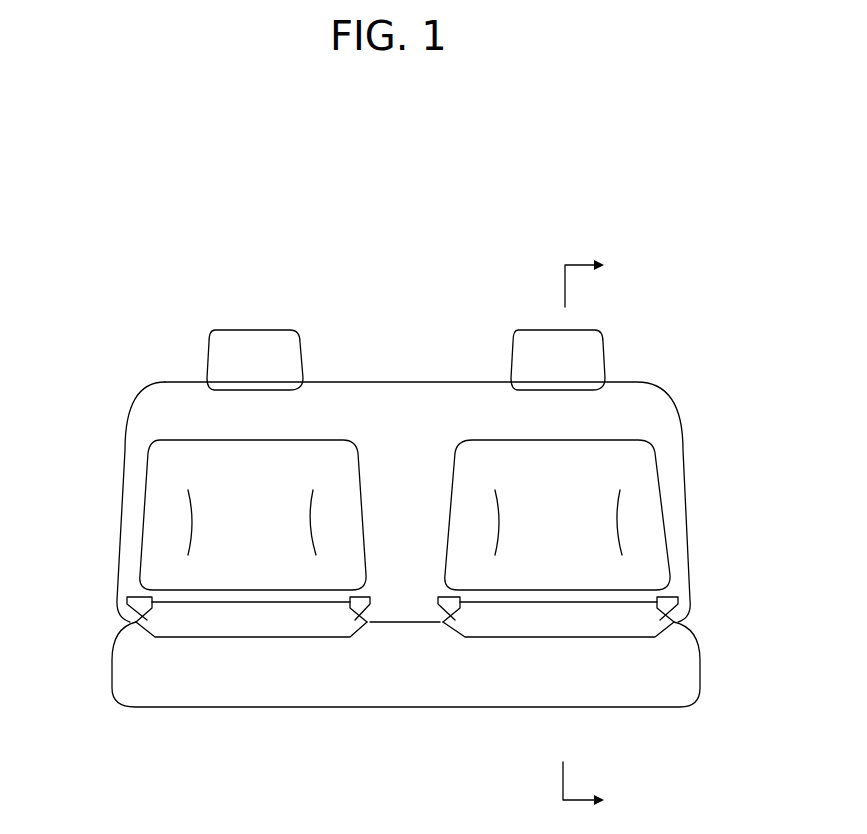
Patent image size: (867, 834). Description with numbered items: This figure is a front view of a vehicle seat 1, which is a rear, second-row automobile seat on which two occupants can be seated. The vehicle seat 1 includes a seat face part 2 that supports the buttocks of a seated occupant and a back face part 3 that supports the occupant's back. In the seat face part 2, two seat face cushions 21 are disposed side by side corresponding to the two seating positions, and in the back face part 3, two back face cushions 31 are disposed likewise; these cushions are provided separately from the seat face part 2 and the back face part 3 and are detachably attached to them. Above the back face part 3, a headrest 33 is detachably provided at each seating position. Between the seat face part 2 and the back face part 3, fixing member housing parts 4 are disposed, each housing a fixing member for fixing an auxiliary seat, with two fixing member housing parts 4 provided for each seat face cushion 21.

The vehicle seat 1 is at (436, 190).
The seat face part 2 is at (683, 665).
The back face part 3 is at (684, 466).
The fixing member housing part 4 is at (130, 600).
The seat face cushion 21 is at (227, 630).
The back face cushion 31 is at (155, 518).
The headrest 33 is at (218, 358).